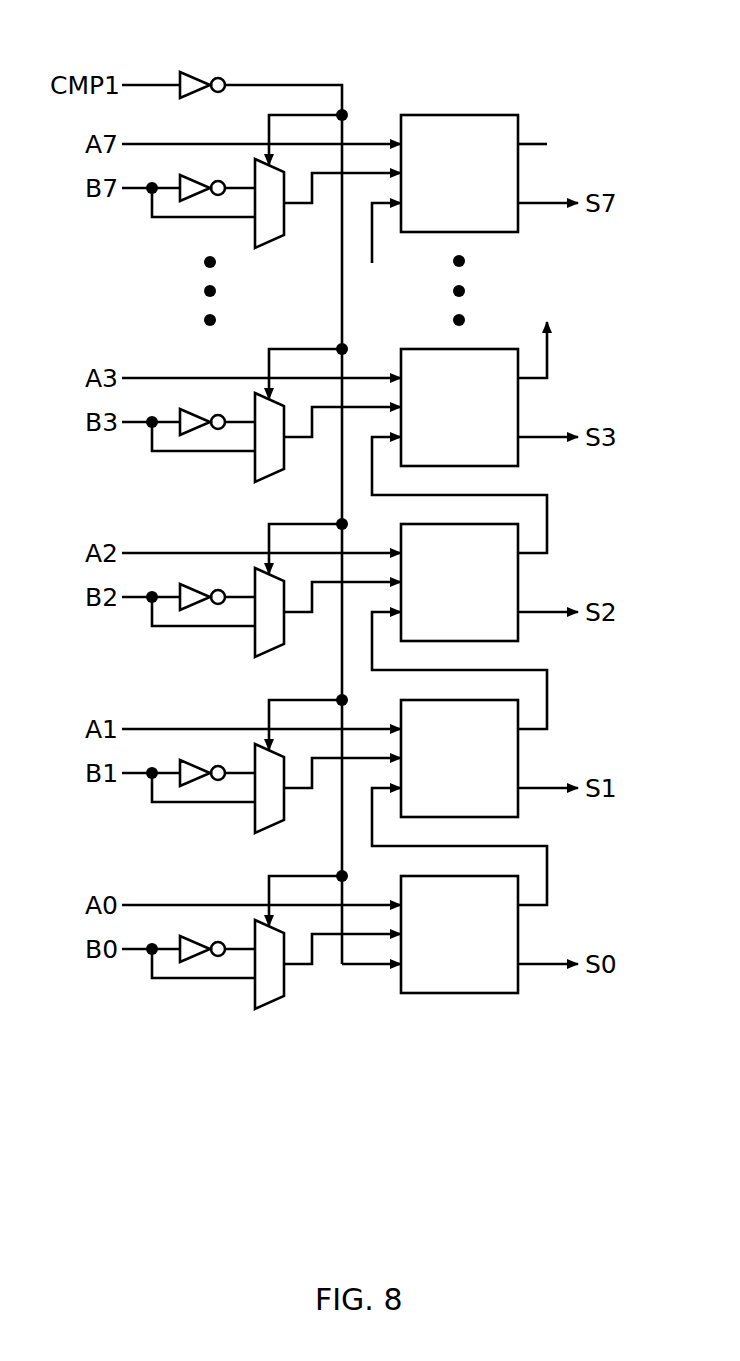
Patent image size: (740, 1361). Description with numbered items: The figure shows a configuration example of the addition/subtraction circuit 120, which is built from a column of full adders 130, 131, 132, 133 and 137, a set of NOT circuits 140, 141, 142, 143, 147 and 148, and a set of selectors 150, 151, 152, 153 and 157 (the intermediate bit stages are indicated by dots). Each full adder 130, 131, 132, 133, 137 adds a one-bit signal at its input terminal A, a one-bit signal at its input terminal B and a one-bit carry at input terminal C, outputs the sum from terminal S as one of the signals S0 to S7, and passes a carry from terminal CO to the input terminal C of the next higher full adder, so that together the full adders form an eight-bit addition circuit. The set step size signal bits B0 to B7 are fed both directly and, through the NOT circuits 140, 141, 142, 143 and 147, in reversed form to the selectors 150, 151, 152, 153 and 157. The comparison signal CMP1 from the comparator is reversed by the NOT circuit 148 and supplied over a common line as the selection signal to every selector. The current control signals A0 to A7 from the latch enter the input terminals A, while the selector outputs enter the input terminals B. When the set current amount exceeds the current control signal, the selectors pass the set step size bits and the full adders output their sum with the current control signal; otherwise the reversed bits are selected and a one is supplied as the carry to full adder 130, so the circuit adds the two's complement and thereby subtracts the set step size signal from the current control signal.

The addition/subtraction circuit 120 is at (578, 114).
The full adder 130 is at (518, 934).
The full adder 131 is at (518, 758).
The full adder 132 is at (518, 582).
The full adder 133 is at (518, 407).
The full adder 137 is at (518, 173).
The NOT circuit 140 is at (182, 961).
The NOT circuit 141 is at (182, 785).
The NOT circuit 142 is at (182, 609).
The NOT circuit 143 is at (182, 434).
The NOT circuit 147 is at (182, 200).
The NOT circuit 148 is at (200, 73).
The selector 150 is at (280, 999).
The selector 151 is at (280, 823).
The selector 152 is at (280, 647).
The selector 153 is at (280, 472).
The selector 157 is at (280, 238).